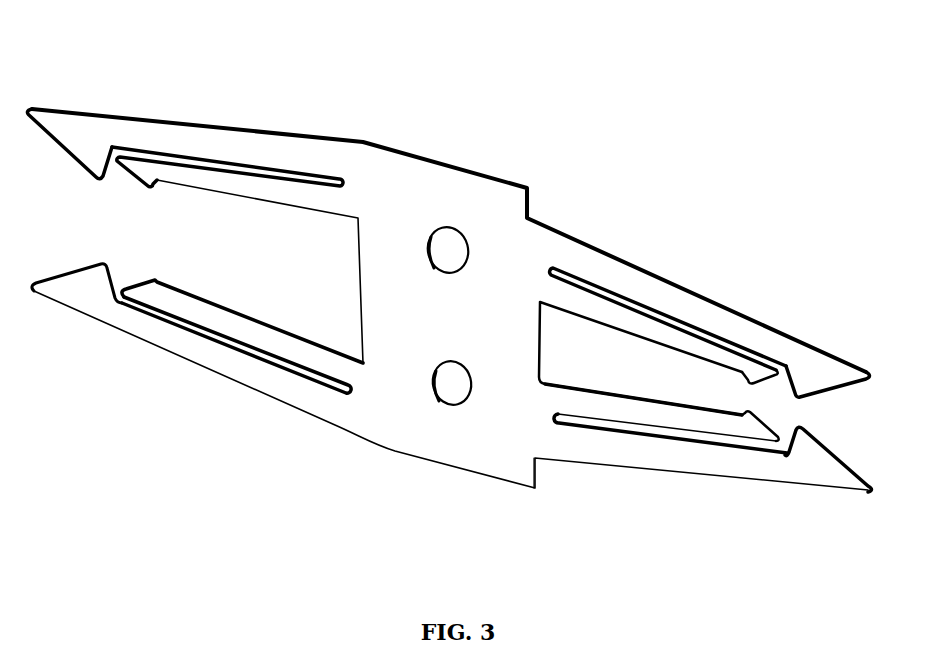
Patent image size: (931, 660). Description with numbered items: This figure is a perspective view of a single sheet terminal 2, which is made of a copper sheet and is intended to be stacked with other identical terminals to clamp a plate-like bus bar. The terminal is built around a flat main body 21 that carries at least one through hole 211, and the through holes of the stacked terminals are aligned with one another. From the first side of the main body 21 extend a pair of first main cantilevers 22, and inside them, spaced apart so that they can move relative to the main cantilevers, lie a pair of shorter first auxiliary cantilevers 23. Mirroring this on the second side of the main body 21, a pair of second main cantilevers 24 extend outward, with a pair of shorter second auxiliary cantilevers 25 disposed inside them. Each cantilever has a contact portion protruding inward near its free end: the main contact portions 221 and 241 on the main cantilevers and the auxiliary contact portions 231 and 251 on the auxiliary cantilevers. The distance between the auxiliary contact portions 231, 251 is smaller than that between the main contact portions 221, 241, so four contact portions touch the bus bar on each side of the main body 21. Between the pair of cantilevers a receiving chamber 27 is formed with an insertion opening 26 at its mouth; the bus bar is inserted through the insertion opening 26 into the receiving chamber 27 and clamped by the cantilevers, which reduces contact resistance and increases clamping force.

The sheet terminal 2 is at (392, 41).
The main body 21 is at (397, 197).
The through hole 211 is at (450, 247).
The first main cantilever 22 is at (698, 313).
The main contact portion 221 is at (800, 445).
The first auxiliary cantilever 23 is at (677, 422).
The auxiliary contact portion 231 is at (755, 380).
The second main cantilever 24 is at (262, 147).
The main contact portion 241 is at (88, 156).
The second auxiliary cantilever 25 is at (258, 333).
The auxiliary contact portion 251 is at (155, 282).
The insertion opening 26 is at (827, 423).
The receiving chamber 27 is at (613, 370).